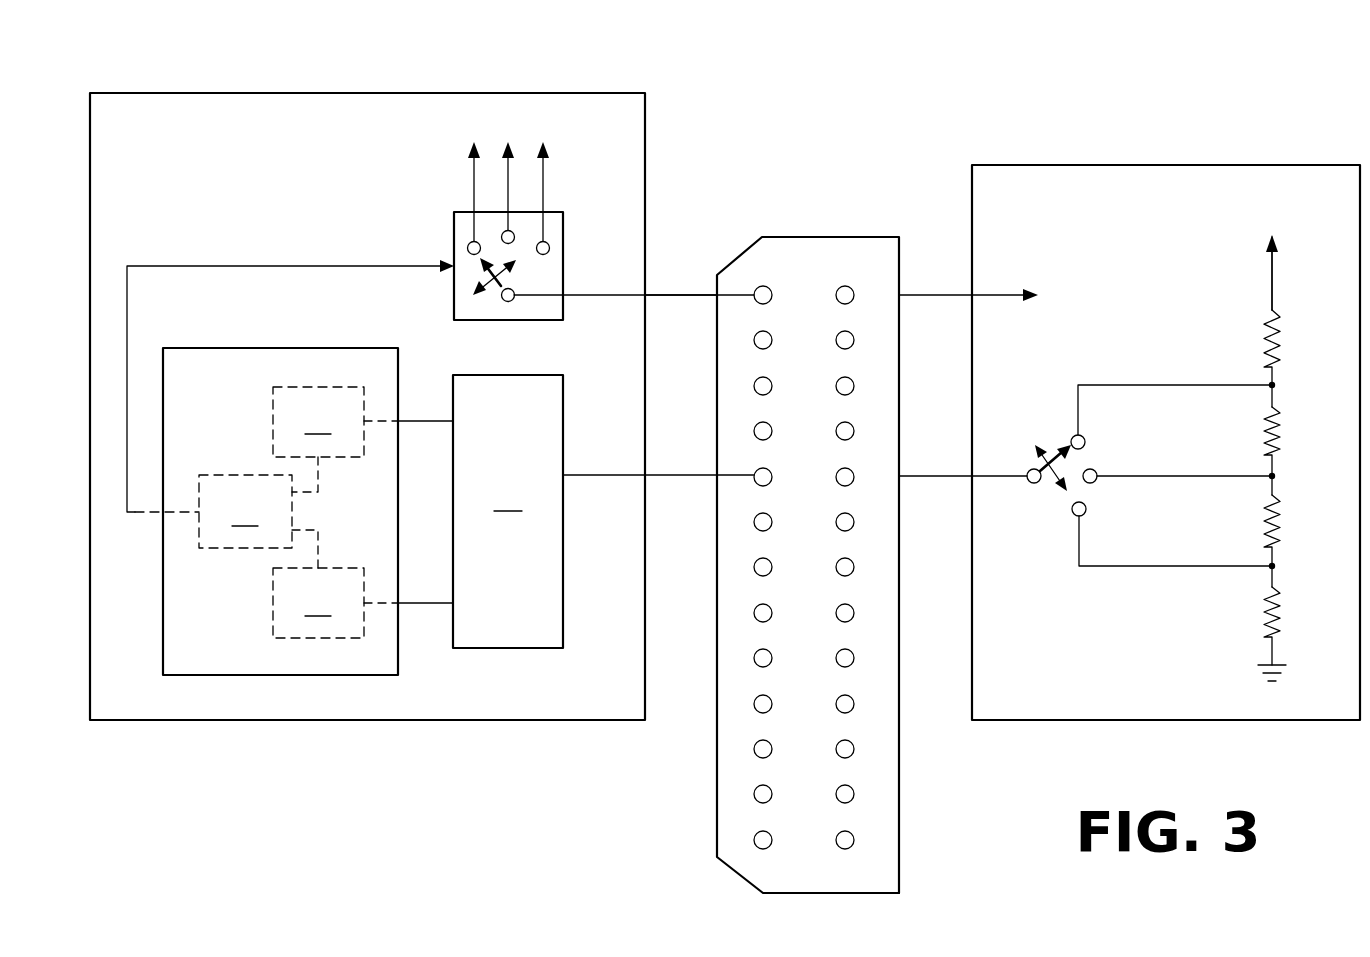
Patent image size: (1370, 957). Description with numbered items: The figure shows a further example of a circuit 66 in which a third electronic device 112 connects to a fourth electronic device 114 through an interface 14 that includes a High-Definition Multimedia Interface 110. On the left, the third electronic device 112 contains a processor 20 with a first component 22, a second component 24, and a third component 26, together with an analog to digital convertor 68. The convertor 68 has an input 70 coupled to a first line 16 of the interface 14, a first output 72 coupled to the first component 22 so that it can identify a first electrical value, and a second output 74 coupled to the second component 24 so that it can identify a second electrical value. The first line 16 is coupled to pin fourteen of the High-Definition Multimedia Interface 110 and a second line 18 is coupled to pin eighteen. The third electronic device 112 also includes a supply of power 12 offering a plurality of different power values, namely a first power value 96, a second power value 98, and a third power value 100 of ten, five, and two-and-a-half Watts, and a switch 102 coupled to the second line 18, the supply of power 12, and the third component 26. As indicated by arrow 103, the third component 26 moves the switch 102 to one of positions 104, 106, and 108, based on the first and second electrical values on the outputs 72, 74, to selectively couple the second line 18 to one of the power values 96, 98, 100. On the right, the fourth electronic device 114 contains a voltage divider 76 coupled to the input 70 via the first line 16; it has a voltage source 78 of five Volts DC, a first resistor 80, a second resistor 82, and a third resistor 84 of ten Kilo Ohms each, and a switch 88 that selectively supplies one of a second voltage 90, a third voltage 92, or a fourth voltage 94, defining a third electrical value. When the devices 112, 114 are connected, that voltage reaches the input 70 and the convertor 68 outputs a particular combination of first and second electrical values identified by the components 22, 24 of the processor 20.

The third electronic device 112 is at (370, 93).
The supply of power 12 is at (388, 180).
The switch 102 is at (510, 320).
The position 104 is at (467, 246).
The position 106 is at (514, 235).
The position 108 is at (550, 248).
The power value P1 96 is at (473, 174).
The power value P2 98 is at (507, 190).
The power value P3 100 is at (544, 176).
The arrow 103 is at (283, 265).
The processor 20 is at (283, 347).
The second component 24 is at (318, 439).
The third component 26 is at (258, 521).
The first component 22 is at (318, 603).
The second output 74 is at (425, 421).
The first output 72 is at (425, 603).
The analog to digital convertor 68 is at (508, 511).
The input 70 is at (598, 474).
The first line 16 is at (682, 474).
The second line 18 is at (682, 294).
The interface 14 is at (830, 237).
The High-Definition Multimedia Interface 110 is at (845, 893).
The circuit 66 is at (922, 74).
The fourth electronic device 114 is at (1167, 165).
The voltage divider 76 is at (1162, 298).
The voltage source V1 78 is at (1270, 278).
The resistor R1 80 is at (1266, 343).
The resistor R2 82 is at (1266, 434).
The resistor R3 84 is at (1266, 522).
The switch 88 is at (1030, 470).
The voltage V2 90 is at (1085, 440).
The voltage V3 92 is at (1094, 467).
The voltage V4 94 is at (1086, 513).